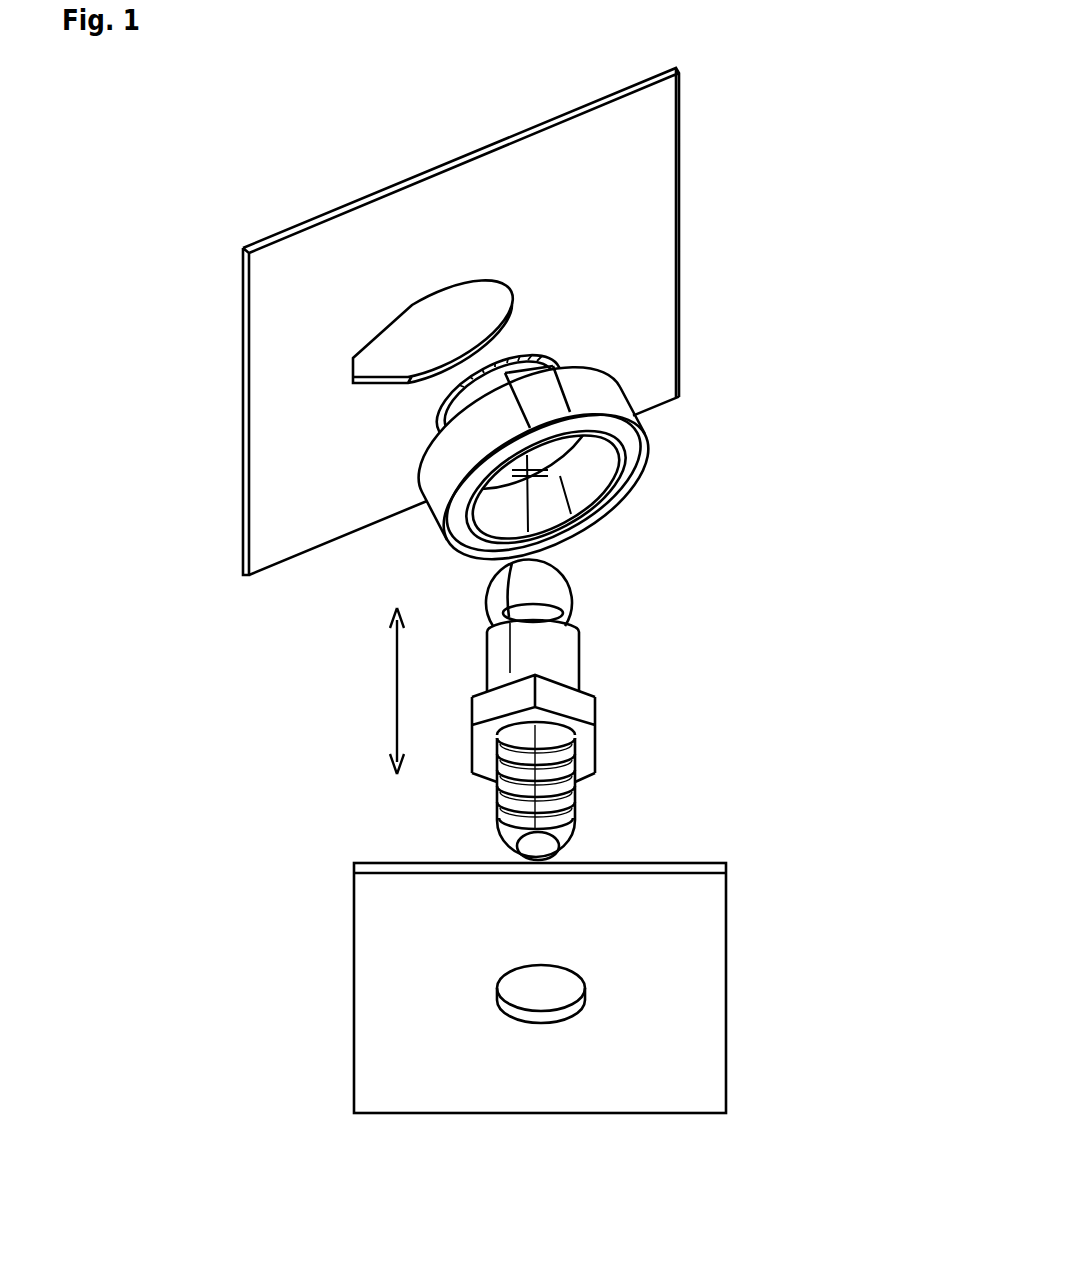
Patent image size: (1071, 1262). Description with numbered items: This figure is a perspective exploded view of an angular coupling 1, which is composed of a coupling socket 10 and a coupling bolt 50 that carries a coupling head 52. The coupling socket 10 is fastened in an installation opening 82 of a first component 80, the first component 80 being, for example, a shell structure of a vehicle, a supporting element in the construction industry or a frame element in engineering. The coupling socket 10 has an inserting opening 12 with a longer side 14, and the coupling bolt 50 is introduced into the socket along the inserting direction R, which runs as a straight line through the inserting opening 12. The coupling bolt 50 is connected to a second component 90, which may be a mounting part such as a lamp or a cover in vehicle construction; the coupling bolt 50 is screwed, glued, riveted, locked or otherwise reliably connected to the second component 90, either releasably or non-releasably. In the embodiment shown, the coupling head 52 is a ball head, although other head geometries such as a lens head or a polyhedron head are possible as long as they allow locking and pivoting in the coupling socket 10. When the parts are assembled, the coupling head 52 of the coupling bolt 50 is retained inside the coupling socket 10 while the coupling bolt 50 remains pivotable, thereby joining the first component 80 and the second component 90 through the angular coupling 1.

The angular coupling 1 is at (835, 50).
The coupling socket 10 is at (639, 441).
The inserting opening 12 is at (585, 471).
The longer side 14 is at (570, 412).
The coupling bolt 50 is at (558, 667).
The coupling head 52 is at (558, 588).
The first component 80 is at (630, 255).
The installation opening 82 is at (445, 292).
The second component 90 is at (690, 926).